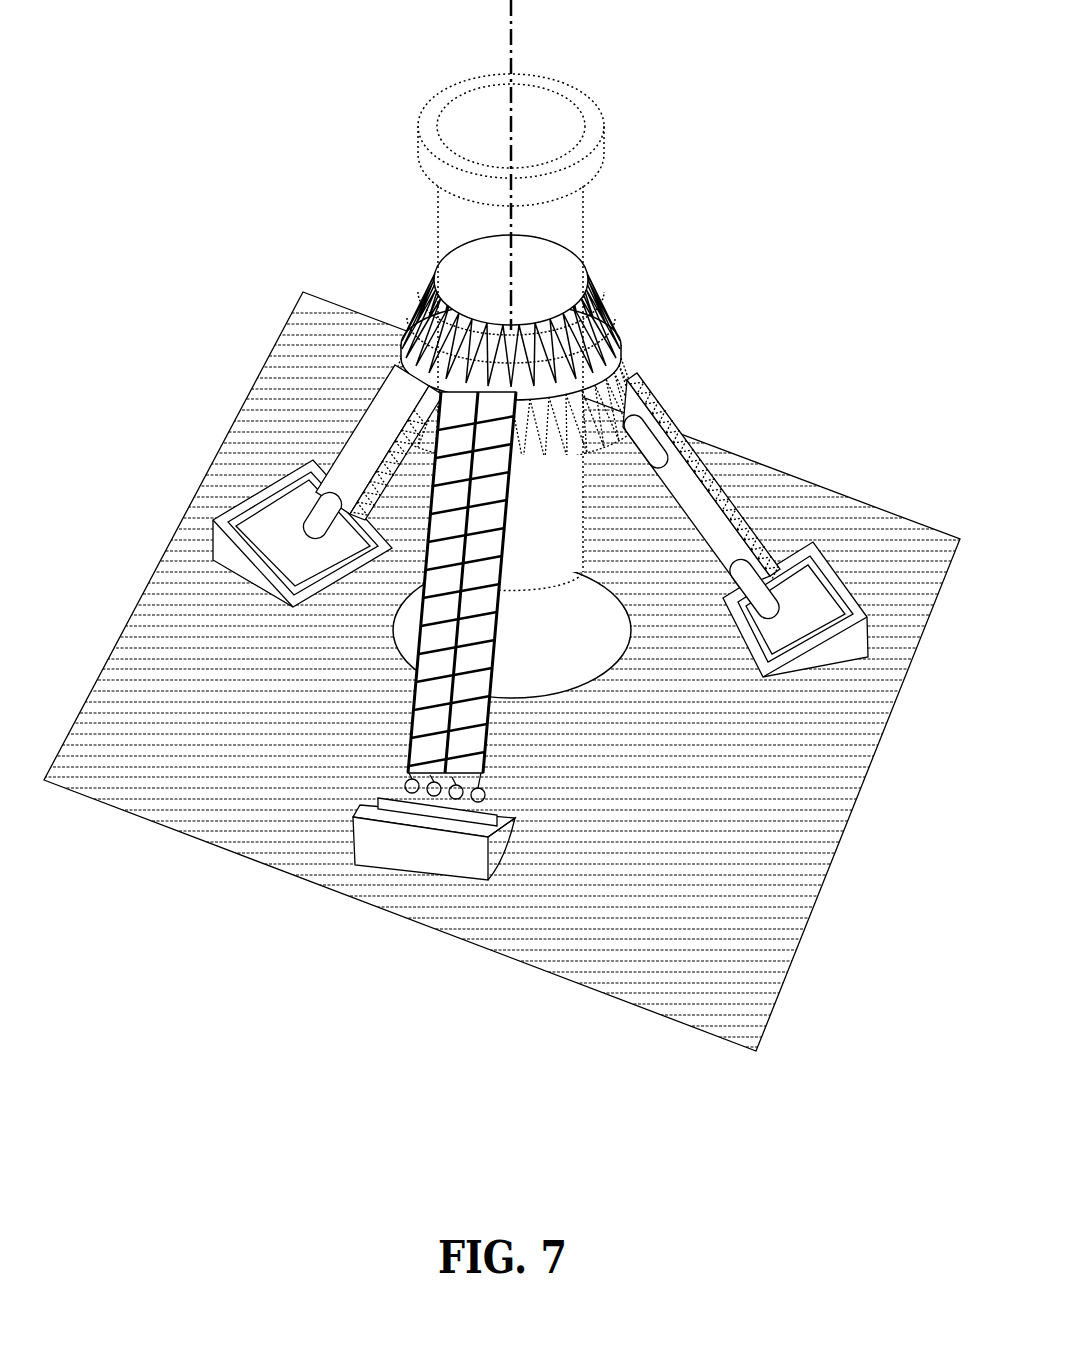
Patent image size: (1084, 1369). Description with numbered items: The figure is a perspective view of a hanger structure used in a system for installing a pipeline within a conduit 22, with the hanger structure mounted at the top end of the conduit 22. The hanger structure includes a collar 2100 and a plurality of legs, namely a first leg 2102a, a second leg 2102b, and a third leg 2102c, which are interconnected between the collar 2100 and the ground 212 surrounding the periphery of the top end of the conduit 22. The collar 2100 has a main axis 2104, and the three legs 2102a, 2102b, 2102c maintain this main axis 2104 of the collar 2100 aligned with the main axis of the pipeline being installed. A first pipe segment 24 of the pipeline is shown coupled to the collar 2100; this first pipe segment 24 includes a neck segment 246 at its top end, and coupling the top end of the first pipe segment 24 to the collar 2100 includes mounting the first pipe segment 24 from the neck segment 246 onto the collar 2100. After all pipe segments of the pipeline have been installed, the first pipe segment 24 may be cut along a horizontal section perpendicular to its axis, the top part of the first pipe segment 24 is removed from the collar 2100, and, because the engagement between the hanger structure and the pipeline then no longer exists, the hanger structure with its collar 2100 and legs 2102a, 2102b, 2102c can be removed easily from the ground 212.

The main axis 2104 is at (508, 42).
The neck segment 246 is at (600, 112).
The first pipe segment 24 is at (583, 213).
The collar 2100 is at (415, 287).
The first leg 2102a is at (668, 413).
The second leg 2102b is at (348, 435).
The third leg 2102c is at (410, 742).
The conduit 22 is at (590, 606).
The ground 212 is at (608, 993).